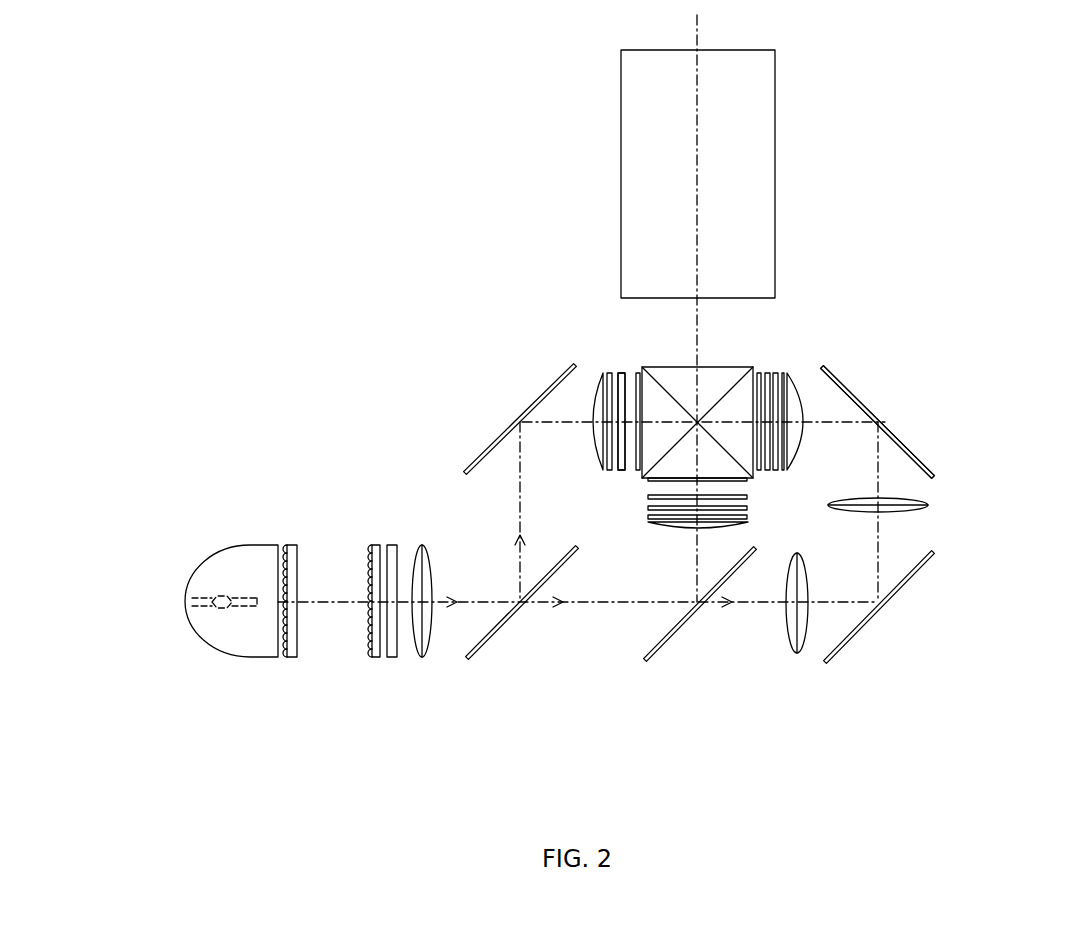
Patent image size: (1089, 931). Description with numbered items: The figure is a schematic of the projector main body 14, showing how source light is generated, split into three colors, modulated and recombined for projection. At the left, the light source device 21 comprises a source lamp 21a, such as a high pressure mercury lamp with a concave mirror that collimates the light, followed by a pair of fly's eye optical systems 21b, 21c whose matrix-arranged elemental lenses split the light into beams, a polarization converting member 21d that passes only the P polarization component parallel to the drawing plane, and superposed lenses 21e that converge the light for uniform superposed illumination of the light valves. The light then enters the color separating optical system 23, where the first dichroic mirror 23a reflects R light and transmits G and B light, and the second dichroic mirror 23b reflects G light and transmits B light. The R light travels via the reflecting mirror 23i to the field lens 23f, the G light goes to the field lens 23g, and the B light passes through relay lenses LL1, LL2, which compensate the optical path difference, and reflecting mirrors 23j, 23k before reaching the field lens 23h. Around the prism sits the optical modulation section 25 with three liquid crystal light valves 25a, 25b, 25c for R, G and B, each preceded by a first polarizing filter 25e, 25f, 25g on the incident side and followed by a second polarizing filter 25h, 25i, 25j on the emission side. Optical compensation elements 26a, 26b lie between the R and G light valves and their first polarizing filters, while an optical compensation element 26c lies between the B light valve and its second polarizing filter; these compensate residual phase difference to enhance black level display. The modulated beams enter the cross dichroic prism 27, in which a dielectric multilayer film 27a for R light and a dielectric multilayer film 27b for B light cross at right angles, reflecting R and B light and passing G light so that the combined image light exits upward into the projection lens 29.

The projector main body 14 is at (272, 35).
The light source device 21 is at (328, 542).
The source lamp 21a is at (232, 643).
The fly's eye optical system 21b is at (293, 660).
The fly's eye optical system 21c is at (376, 660).
The polarization converting member 21d is at (393, 660).
The superposed lenses 21e is at (422, 546).
The color separating optical system 23 is at (719, 690).
The first dichroic mirror 23a is at (470, 664).
The second dichroic mirror 23b is at (701, 613).
The field lens 23f is at (606, 402).
The field lens 23g is at (664, 520).
The field lens 23h is at (886, 432).
The reflecting mirror 23i is at (466, 462).
The reflecting mirror 23j is at (860, 632).
The reflecting mirror 23k is at (936, 472).
The optical modulation section 25 is at (580, 376).
The liquid crystal light valve 25a is at (596, 423).
The liquid crystal light valve 25b is at (655, 510).
The liquid crystal light valve 25c is at (794, 455).
The first polarizing filter 25e is at (617, 443).
The first polarizing filter 25f is at (660, 528).
The first polarizing filter 25g is at (770, 435).
The second polarizing filter 25h is at (619, 477).
The second polarizing filter 25i is at (647, 498).
The second polarizing filter 25j is at (778, 410).
The optical compensation element 26a is at (634, 372).
The optical compensation element 26b is at (752, 485).
The optical compensation element 26c is at (762, 478).
The cross dichroic prism 27 is at (718, 358).
The dielectric multilayer film 27a is at (744, 370).
The dielectric multilayer film 27b is at (646, 370).
The projection lens 29 is at (640, 135).
The relay lens LL1 is at (797, 655).
The relay lens LL2 is at (928, 505).